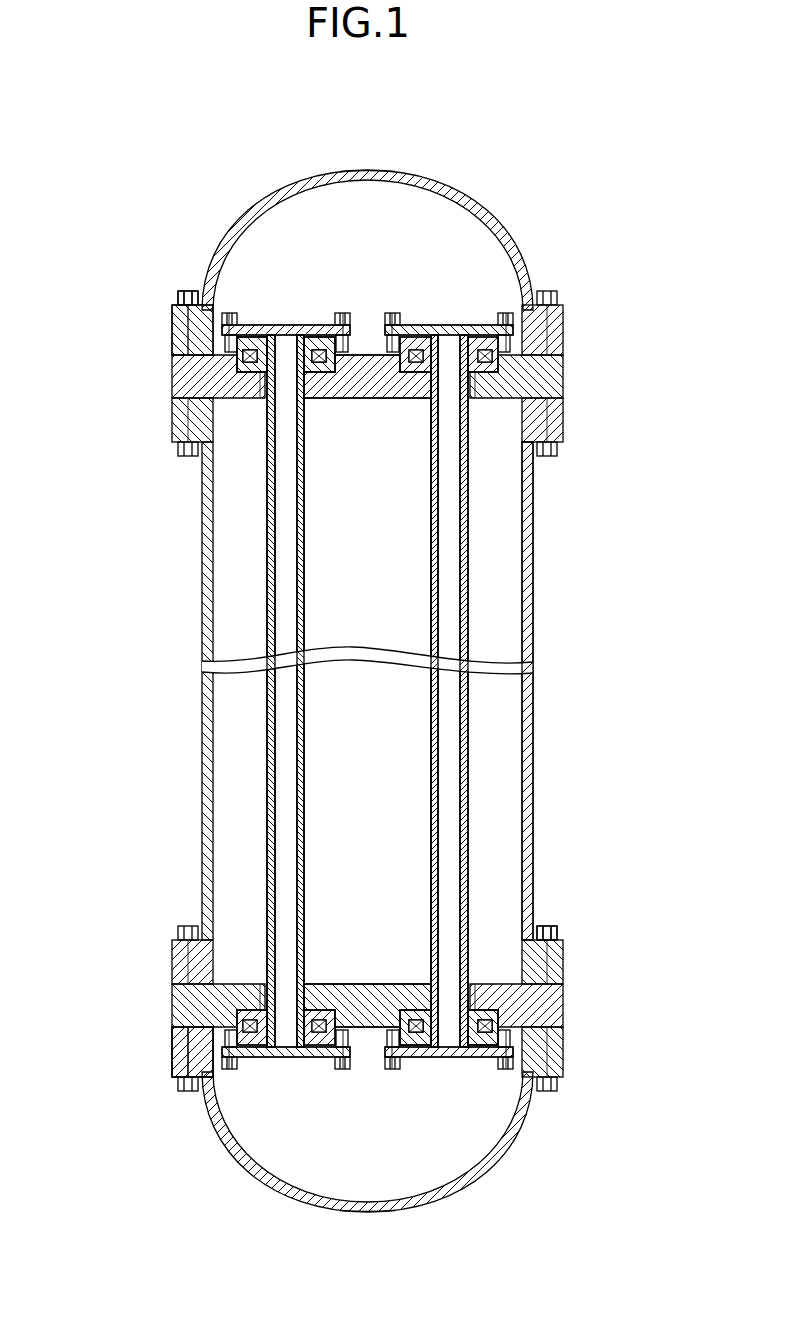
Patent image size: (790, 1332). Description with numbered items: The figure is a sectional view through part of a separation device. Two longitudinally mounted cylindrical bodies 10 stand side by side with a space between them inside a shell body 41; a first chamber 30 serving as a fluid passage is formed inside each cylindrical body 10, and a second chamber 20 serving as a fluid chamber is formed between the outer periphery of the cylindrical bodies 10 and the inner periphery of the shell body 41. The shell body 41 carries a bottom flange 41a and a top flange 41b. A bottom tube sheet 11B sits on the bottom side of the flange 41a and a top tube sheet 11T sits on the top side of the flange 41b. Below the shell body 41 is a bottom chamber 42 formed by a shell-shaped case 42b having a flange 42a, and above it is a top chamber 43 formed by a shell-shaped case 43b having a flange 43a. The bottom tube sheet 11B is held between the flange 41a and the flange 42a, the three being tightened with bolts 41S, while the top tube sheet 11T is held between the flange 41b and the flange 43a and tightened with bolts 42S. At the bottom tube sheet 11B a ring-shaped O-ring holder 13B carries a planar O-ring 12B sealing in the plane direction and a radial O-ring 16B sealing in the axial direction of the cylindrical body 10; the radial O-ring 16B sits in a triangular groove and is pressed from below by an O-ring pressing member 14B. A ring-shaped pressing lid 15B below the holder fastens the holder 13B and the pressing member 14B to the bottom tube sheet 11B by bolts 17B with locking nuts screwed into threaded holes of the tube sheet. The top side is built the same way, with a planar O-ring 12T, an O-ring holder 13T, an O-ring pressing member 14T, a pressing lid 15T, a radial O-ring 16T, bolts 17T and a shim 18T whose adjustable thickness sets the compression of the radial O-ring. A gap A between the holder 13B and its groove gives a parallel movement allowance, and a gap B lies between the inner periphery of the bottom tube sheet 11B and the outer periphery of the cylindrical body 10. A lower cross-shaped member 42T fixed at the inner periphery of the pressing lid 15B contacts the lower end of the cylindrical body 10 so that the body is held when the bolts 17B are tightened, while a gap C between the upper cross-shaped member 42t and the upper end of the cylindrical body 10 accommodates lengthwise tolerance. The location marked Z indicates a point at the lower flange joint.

The cylindrical body 10 is at (265, 777).
The top tube sheet 11T is at (582, 367).
The bottom tube sheet 11B is at (572, 996).
The upper through hole 12T is at (328, 384).
The planar O-ring 12B is at (335, 994).
The upper nut 13T is at (250, 300).
The O-ring holder 13B is at (238, 1058).
The upper pressing plate 14T is at (345, 330).
The O-ring pressing member 14B is at (348, 1057).
The upper seal holder 15T is at (315, 345).
The pressing lid 15B is at (315, 1055).
The upper stud bolt 16T is at (343, 335).
The radial O-ring 16B is at (343, 1058).
The upper flange bolt 17T is at (190, 292).
The bolts 17B is at (217, 1080).
The upper gap 18T is at (237, 333).
The second chamber 20 is at (492, 538).
The first chamber 30 is at (283, 557).
The shell body 41 is at (203, 608).
The flange 41a is at (568, 950).
The flange 41b is at (565, 417).
The bolts 41S is at (547, 928).
The bottom chamber 42 is at (280, 1167).
The flange 42a is at (557, 1060).
The shell-shaped case 42b is at (357, 1212).
The cross-shaped member 42t is at (278, 323).
The lower plate end 42T is at (275, 1058).
The bolts 42S is at (170, 310).
The top chamber 43 is at (280, 217).
The flange 43a is at (180, 336).
The shell-shaped case 43b is at (358, 170).
The gap A is at (183, 357).
The gap B is at (262, 385).
The gap C is at (288, 390).
The direction Z is at (210, 1054).